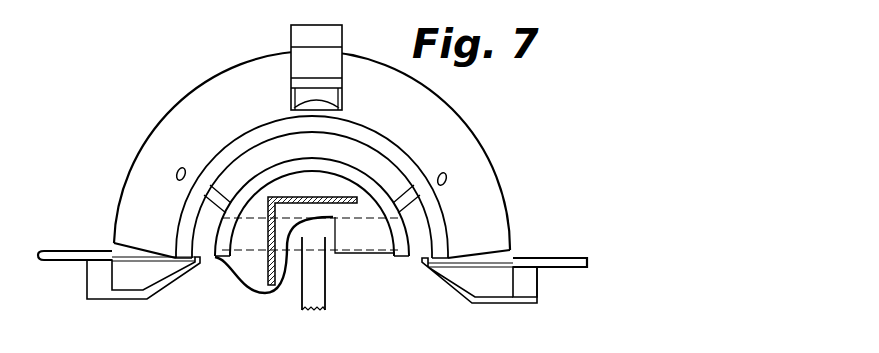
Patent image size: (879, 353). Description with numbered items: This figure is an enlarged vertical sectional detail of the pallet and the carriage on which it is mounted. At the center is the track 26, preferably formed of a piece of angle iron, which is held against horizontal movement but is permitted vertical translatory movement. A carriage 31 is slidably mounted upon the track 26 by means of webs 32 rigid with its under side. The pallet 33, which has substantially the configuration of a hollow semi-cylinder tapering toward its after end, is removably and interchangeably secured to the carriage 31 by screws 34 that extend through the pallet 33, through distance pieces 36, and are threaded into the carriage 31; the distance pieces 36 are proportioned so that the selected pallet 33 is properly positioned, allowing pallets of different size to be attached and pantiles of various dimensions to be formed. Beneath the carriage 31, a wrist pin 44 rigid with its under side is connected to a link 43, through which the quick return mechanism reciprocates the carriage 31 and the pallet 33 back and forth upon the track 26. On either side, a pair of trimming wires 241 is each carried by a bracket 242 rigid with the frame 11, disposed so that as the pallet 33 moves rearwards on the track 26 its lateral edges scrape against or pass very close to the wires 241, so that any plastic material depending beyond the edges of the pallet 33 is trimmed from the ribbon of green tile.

The frame 11 is at (587, 262).
The track 26 is at (290, 197).
The carriage 31 is at (358, 176).
The webs 32 is at (338, 188).
The pallet 33 is at (150, 146).
The screws 34 is at (446, 177).
The distance pieces 36 is at (406, 210).
The link 43 is at (325, 295).
The wrist pin 44 is at (365, 250).
The trimming wires 241 is at (501, 268).
The bracket 242 is at (507, 303).